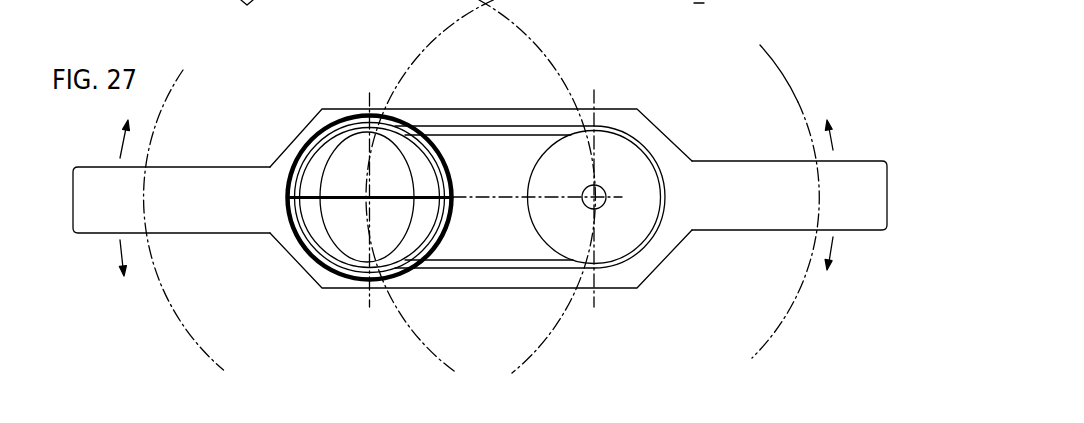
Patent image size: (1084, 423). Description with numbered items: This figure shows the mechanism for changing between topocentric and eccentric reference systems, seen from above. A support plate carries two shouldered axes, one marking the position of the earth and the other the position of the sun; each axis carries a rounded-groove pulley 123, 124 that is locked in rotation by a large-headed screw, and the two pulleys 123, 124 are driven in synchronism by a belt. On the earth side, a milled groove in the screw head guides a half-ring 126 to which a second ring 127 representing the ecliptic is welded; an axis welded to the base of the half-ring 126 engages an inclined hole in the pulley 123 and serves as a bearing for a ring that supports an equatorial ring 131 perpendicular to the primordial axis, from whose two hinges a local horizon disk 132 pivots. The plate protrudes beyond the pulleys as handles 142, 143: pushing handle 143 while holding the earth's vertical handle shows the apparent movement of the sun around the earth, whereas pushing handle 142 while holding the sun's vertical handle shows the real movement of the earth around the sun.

The rounded-groove pulley 123 is at (413, 152).
The rounded-groove pulley 124 is at (619, 156).
The half-ring 126 is at (337, 246).
The second ring 127 is at (297, 241).
The equatorial ring 131 is at (337, 204).
The local horizon disk 132 is at (387, 247).
The handle 142 is at (102, 226).
The handle 143 is at (865, 224).